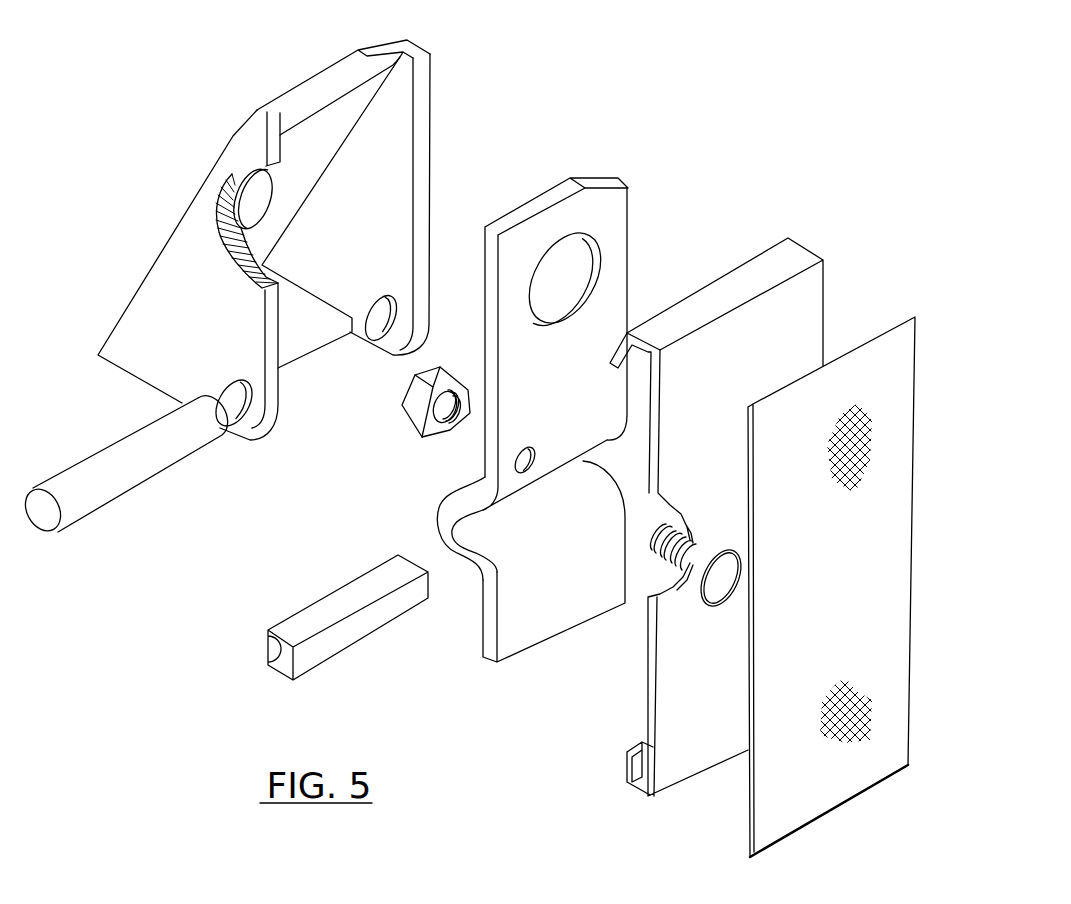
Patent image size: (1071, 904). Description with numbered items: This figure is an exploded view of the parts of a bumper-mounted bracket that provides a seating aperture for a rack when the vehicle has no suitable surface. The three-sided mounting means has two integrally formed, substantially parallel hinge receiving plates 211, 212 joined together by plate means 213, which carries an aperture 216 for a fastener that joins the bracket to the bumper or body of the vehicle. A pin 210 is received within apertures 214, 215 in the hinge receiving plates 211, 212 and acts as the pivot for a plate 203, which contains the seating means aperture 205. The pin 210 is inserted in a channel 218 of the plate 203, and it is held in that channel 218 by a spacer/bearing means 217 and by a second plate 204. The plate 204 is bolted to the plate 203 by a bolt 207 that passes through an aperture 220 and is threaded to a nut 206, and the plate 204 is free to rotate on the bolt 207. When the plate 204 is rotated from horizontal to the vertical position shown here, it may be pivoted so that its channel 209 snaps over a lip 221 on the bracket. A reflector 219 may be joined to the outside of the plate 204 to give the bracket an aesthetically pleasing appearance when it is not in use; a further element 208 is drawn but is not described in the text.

The plate 203 is at (525, 635).
The plate 204 is at (688, 743).
The aperture 205 is at (562, 273).
The nut 206 is at (412, 422).
The bolt 207 is at (720, 575).
The retaining lip 208 is at (640, 765).
The channel 209 is at (795, 252).
The pin 210 is at (118, 455).
The hinge receiving plate 211 is at (175, 258).
The hinge receiving plate 212 is at (390, 167).
The plate means 213 is at (292, 180).
The aperture 214 is at (241, 412).
The aperture 215 is at (383, 322).
The aperture 216 is at (250, 203).
The spacer/bearing means 217 is at (315, 617).
The channel 218 is at (470, 530).
The reflector 219 is at (885, 357).
The aperture 220 is at (540, 448).
The lip 221 is at (365, 73).